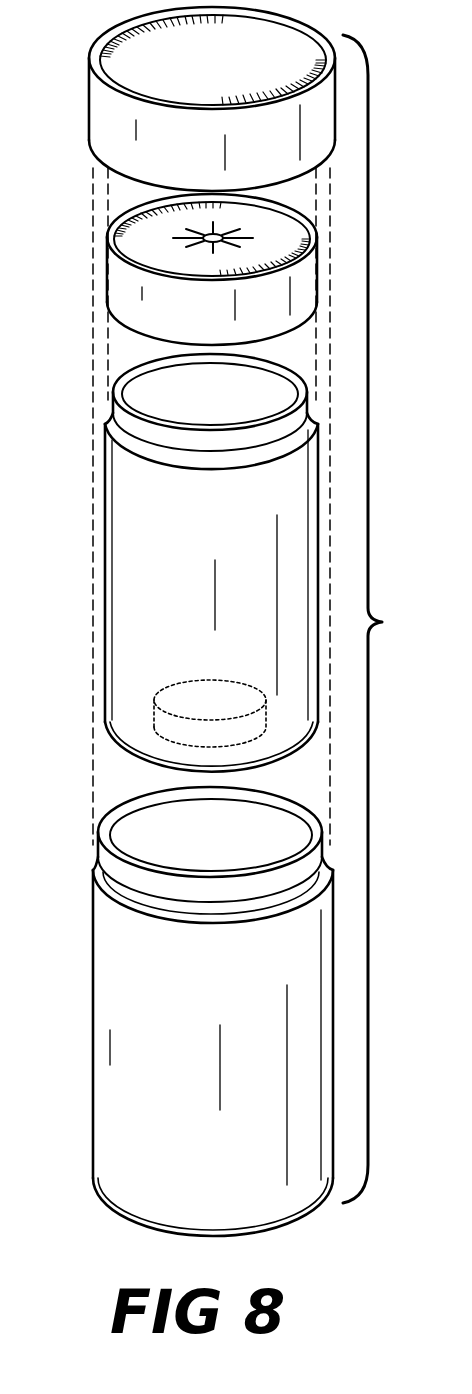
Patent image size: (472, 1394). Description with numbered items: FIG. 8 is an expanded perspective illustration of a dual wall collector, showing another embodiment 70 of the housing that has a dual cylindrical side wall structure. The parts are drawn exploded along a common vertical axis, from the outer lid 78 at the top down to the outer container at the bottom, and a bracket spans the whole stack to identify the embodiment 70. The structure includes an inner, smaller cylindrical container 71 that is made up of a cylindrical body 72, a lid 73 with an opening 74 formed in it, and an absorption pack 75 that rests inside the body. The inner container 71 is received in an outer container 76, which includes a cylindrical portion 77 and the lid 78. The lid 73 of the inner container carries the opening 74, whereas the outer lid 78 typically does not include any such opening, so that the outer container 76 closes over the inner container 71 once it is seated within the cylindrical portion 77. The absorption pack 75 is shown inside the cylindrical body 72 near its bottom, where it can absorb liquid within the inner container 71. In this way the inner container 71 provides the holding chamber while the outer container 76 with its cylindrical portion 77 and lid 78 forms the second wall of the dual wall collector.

The dual wall housing embodiment 70 is at (378, 619).
The inner cylindrical container 71 is at (177, 563).
The cylindrical body 72 is at (123, 552).
The lid 73 is at (273, 230).
The opening 74 is at (197, 233).
The absorption pack 75 is at (200, 692).
The outer container 76 is at (184, 1011).
The cylindrical portion 77 is at (105, 962).
The outer lid 78 is at (88, 103).